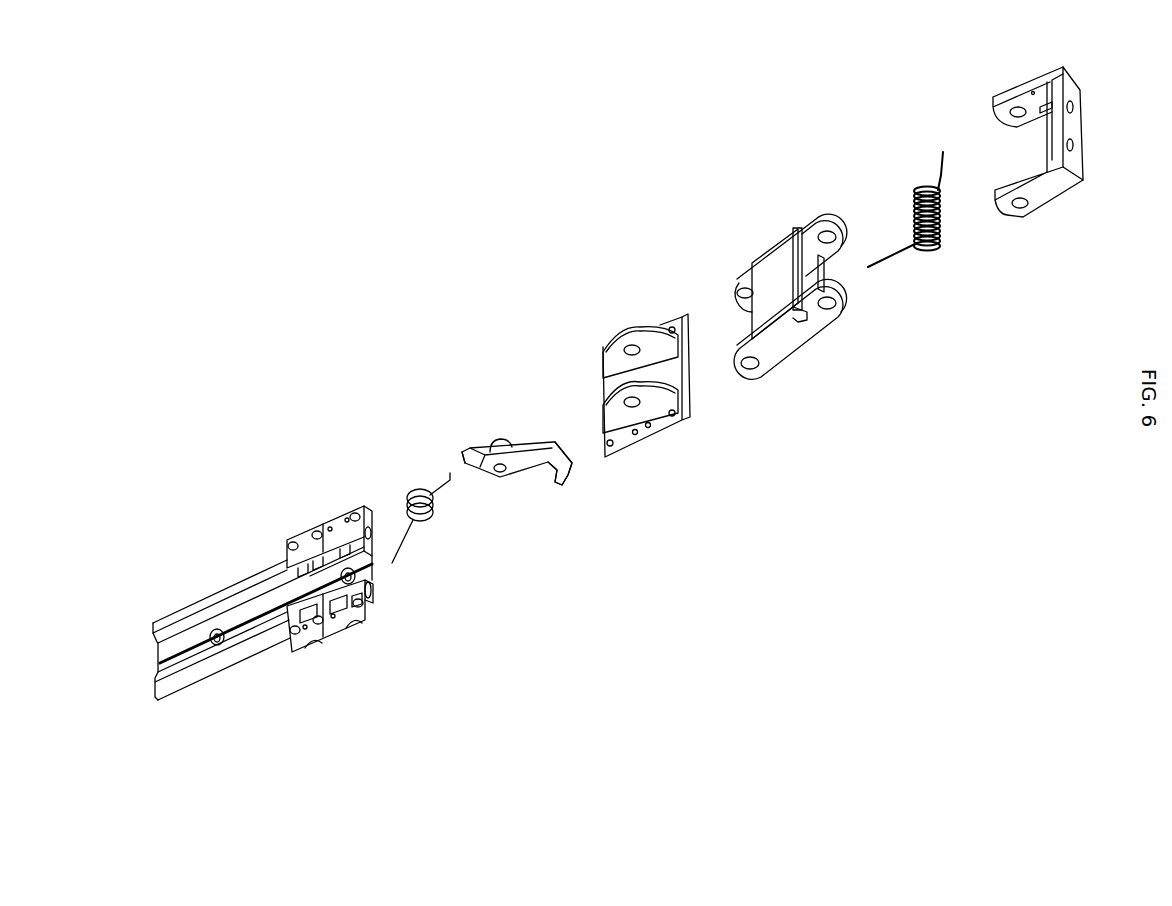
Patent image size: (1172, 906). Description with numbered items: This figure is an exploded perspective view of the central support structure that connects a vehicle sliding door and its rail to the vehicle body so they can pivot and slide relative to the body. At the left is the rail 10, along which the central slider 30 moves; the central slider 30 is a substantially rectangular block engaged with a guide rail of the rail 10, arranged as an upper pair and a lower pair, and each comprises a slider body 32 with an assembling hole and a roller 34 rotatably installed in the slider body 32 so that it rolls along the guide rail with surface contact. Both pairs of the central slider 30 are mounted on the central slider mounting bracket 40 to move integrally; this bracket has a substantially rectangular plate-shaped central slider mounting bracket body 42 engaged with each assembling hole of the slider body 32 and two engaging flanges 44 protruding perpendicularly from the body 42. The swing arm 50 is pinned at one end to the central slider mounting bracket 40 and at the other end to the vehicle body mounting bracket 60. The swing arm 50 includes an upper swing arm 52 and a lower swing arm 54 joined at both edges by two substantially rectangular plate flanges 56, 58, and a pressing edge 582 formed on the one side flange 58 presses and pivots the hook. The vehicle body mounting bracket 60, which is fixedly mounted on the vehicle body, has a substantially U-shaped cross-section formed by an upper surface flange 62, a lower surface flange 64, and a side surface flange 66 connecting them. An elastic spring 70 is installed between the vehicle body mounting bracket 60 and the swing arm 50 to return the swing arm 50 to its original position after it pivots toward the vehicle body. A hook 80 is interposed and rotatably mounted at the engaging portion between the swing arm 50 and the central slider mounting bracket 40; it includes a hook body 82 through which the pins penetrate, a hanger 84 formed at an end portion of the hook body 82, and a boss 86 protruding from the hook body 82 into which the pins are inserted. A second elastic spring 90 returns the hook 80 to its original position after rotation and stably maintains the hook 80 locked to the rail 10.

The rail 10 is at (213, 668).
The central slider 30 is at (333, 565).
The slider body 32 is at (297, 532).
The roller 34 is at (337, 645).
The central slider mounting bracket 40 is at (628, 367).
The central slider mounting bracket body 42 is at (661, 425).
The engaging flanges 44 is at (608, 355).
The swing arm 50 is at (780, 295).
The upper swing arm 52 is at (785, 355).
The lower swing arm 54 is at (817, 220).
The flange 56 is at (825, 277).
The flange 58 is at (773, 257).
The pressing edge 582 is at (748, 320).
The vehicle body mounting bracket 60 is at (1035, 198).
The upper surface flange 62 is at (1044, 248).
The lower surface flange 64 is at (995, 97).
The side surface flange 66 is at (1085, 182).
The elastic spring 70 is at (928, 258).
The hook 80 is at (517, 493).
The hook body 82 is at (527, 440).
The hanger 84 is at (559, 497).
The boss 86 is at (495, 437).
The elastic spring 90 is at (421, 490).